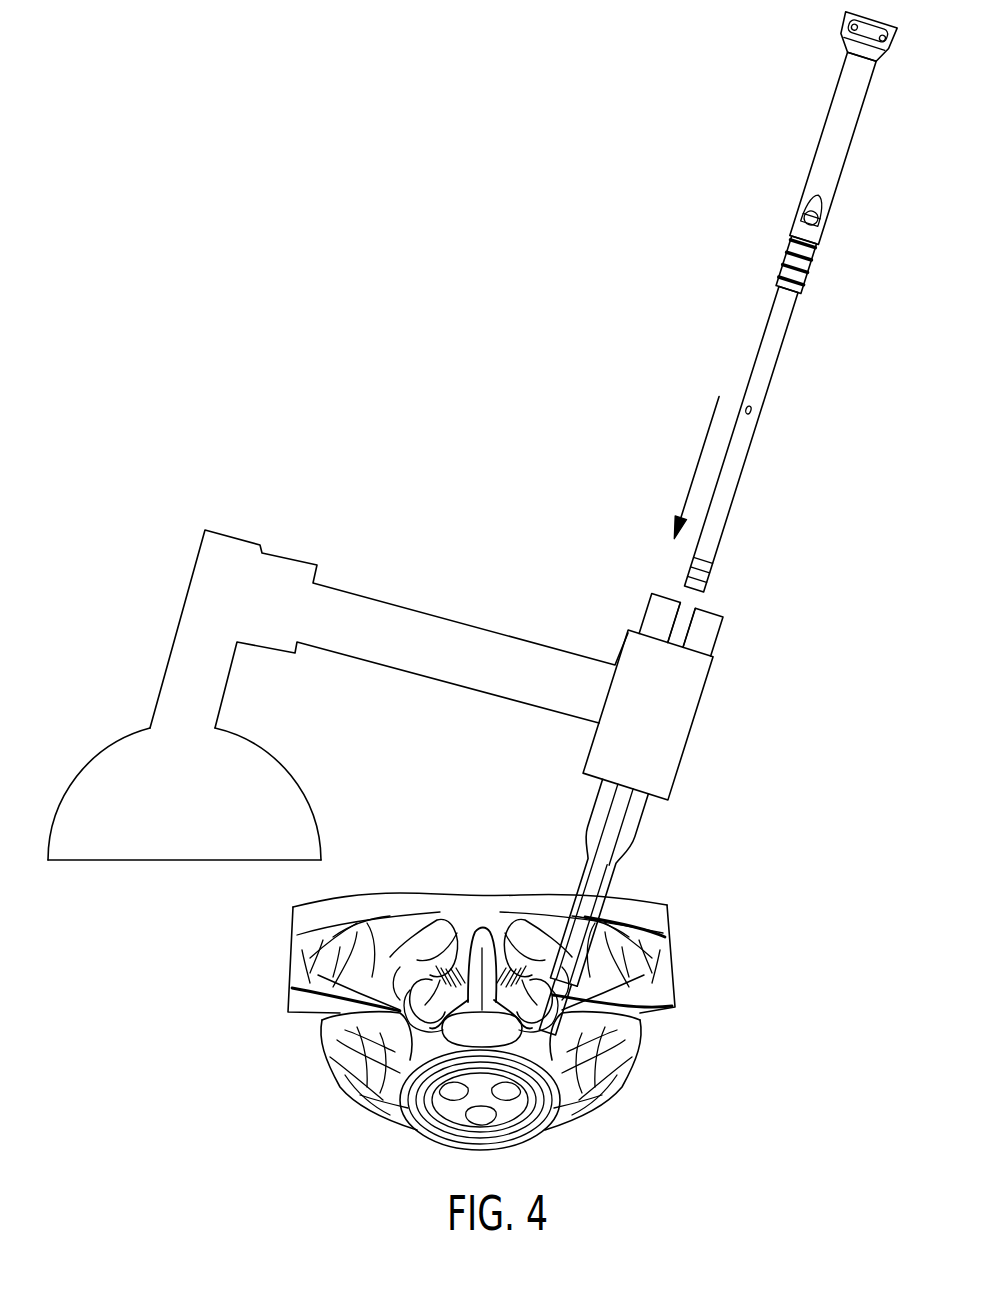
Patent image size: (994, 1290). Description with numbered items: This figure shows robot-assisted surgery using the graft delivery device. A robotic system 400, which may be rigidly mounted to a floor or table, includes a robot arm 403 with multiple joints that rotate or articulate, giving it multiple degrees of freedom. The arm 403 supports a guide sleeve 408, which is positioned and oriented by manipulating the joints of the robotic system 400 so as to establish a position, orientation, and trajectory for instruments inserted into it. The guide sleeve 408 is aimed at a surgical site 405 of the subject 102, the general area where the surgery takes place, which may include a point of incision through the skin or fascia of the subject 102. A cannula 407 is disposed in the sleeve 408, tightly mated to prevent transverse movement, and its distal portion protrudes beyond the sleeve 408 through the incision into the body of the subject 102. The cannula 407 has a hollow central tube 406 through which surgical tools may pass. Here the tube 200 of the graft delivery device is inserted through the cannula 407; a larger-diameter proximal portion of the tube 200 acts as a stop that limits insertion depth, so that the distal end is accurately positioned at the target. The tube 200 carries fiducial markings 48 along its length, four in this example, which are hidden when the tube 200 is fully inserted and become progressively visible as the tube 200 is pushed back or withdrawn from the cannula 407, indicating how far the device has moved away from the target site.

The fiducial markings 48 is at (783, 267).
The subject 102 is at (292, 977).
The tube 200 is at (770, 383).
The robotic system 400 is at (122, 738).
The robot arm 403 is at (483, 627).
The surgical site 405 is at (573, 890).
The hollow central tube 406 is at (685, 602).
The cannula 407 is at (717, 638).
The guide sleeve 408 is at (697, 722).